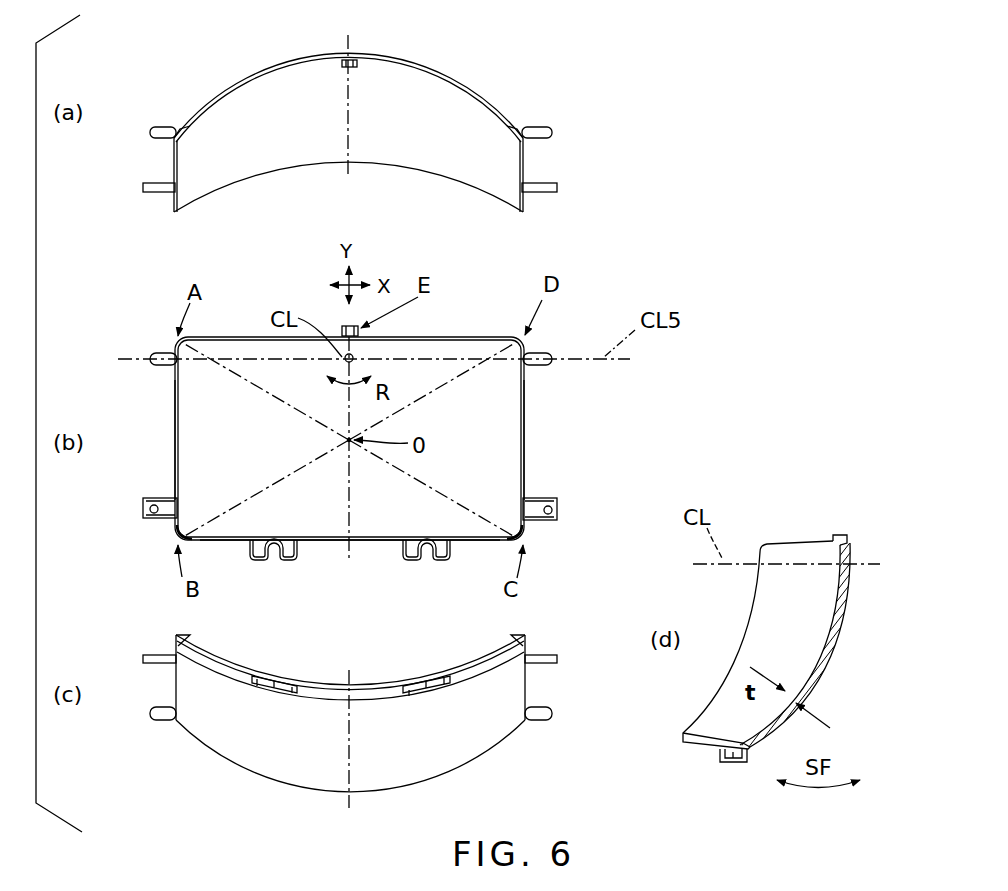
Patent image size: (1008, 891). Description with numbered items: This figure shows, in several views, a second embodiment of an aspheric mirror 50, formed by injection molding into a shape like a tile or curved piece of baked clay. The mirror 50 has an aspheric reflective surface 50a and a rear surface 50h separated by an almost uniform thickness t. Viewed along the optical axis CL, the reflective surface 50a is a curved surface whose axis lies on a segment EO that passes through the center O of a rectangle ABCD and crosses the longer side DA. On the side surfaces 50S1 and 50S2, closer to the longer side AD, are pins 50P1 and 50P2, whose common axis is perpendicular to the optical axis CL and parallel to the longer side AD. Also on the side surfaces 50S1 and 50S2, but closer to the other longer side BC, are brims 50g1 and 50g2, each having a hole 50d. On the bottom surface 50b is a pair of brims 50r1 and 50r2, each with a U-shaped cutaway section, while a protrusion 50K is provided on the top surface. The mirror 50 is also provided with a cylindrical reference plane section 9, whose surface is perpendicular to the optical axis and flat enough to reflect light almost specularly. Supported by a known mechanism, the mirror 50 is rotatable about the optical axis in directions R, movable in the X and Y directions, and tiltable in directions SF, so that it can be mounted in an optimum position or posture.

The aspheric mirror 50 is at (460, 87).
The aspheric reflective surface 50a is at (420, 140).
The bottom surface 50b is at (365, 548).
The hole 50d is at (153, 503).
The brim 50g1 is at (163, 520).
The brim 50g2 is at (542, 522).
The rear surface 50h is at (830, 640).
The protrusion 50K is at (340, 62).
The pin 50P1 is at (166, 352).
The pin 50P2 is at (538, 350).
The brim 50r1 is at (282, 561).
The brim 50r2 is at (417, 561).
The side surface 50S1 is at (175, 427).
The side surface 50S2 is at (527, 410).
The cylindrical-concave reference plane section 9 is at (364, 357).